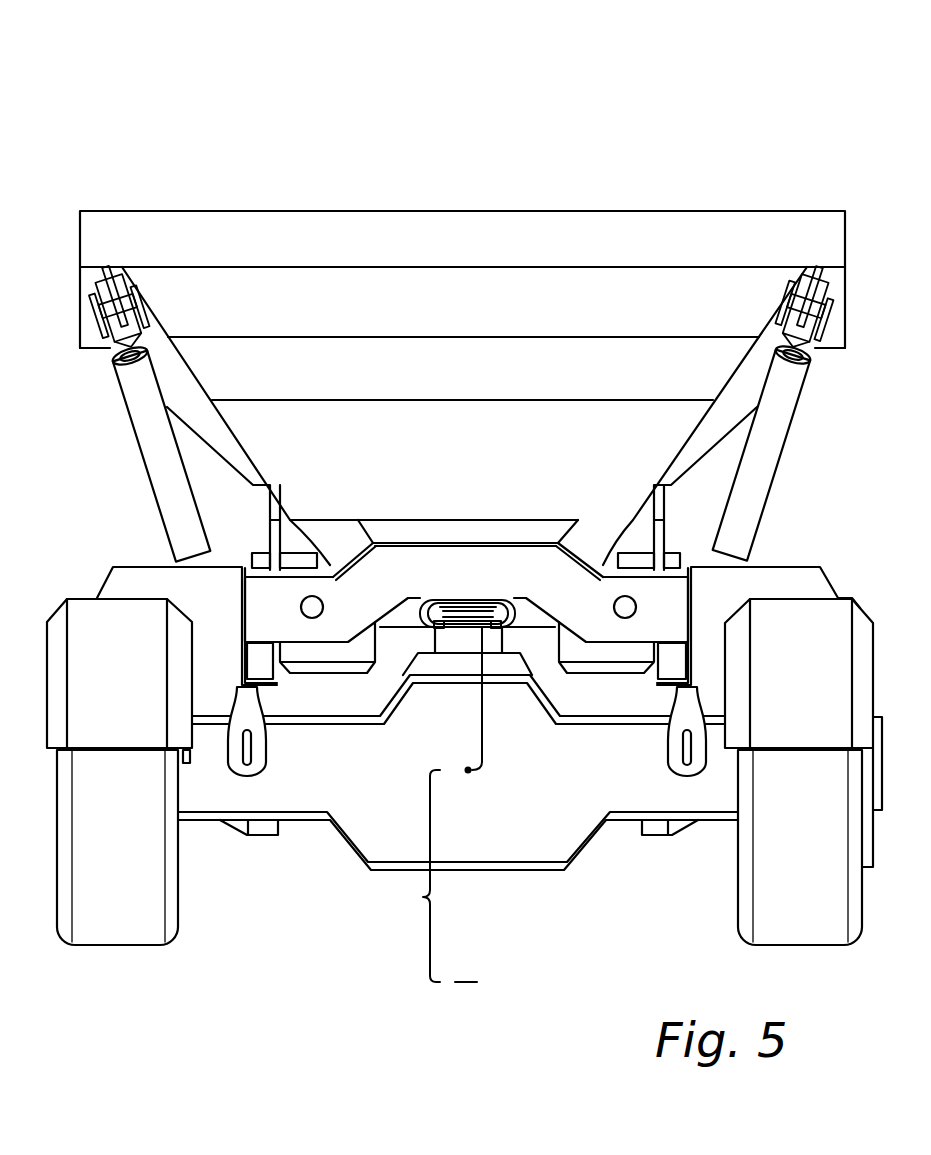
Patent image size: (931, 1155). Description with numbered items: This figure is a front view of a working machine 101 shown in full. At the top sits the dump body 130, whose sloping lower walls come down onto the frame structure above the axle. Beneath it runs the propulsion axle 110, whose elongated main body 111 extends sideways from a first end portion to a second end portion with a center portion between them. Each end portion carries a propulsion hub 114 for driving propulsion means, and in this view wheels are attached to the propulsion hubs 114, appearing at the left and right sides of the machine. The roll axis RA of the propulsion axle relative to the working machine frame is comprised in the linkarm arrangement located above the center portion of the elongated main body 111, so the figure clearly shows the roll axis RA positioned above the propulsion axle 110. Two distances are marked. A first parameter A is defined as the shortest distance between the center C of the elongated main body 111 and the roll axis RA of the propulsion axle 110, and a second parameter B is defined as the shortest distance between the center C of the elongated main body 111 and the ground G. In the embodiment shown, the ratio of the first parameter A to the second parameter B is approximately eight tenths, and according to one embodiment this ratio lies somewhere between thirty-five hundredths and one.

The working machine 101 is at (740, 113).
The dump body 130 is at (477, 302).
The propulsion axle 110 is at (308, 868).
The elongated main body 111 is at (587, 845).
The propulsion hub 114 is at (22, 712).
The roll axis RA is at (470, 605).
The first parameter A is at (482, 690).
The second parameter B is at (418, 876).
The center of the elongated main body C is at (470, 772).
The ground G is at (466, 966).